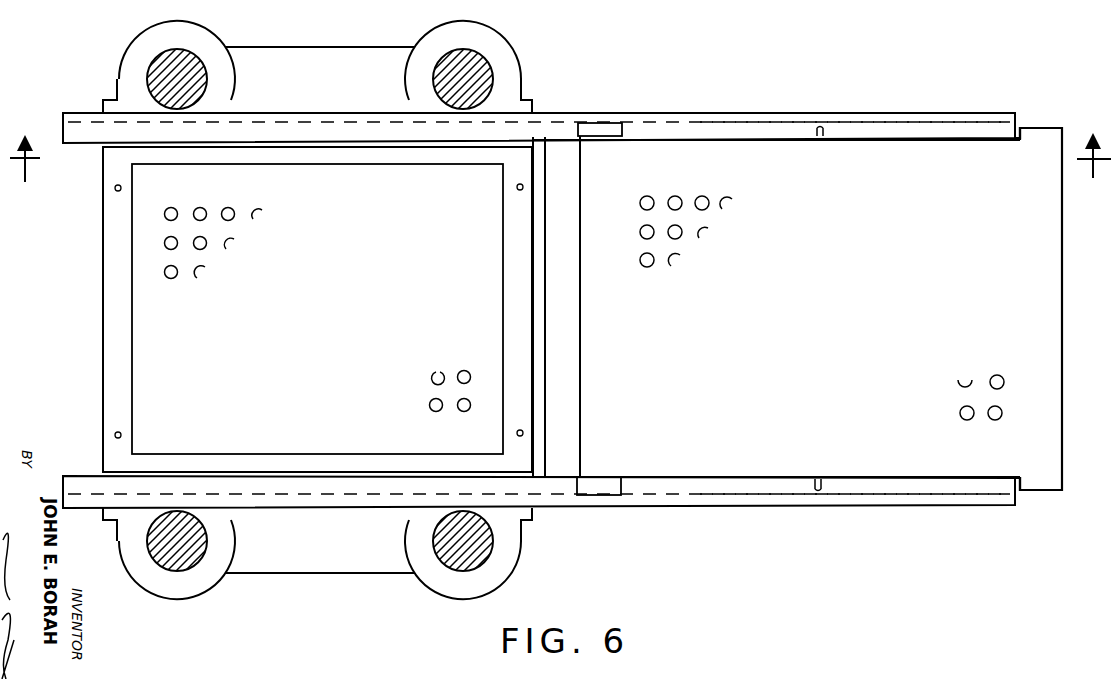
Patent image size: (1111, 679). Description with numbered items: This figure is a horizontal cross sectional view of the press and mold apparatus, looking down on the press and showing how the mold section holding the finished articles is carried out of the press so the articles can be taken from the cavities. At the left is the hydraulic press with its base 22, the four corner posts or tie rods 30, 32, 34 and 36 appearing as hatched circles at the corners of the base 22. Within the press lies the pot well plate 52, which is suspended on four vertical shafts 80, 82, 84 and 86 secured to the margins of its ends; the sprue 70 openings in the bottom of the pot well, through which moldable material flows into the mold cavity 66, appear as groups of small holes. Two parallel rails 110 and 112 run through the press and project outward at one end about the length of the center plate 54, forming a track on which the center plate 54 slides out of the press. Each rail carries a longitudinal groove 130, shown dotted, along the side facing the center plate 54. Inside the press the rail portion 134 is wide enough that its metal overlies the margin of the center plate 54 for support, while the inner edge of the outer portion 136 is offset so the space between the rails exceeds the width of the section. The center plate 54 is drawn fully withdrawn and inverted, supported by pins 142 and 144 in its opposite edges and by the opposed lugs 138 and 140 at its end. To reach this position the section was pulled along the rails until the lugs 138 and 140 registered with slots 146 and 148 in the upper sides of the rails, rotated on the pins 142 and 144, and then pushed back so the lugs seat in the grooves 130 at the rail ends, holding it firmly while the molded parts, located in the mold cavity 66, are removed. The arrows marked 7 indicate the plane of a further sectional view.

The section line 7- 7 is at (560, 175).
The base 22 is at (382, 62).
The corner post or tie rod 30 is at (487, 550).
The corner post or tie rod 32 is at (483, 82).
The corner post or tie rod 34 is at (152, 70).
The corner post or tie rod 36 is at (180, 565).
The pot well plate 52 is at (132, 355).
The center plate 54 is at (1062, 300).
The mold cavity 66 is at (702, 240).
The sprue 70 is at (177, 274).
The vertical shaft 80 is at (516, 433).
The vertical shaft 82 is at (516, 187).
The vertical shaft 84 is at (121, 188).
The vertical shaft 86 is at (121, 434).
The rail 110 is at (757, 507).
The rail 112 is at (750, 87).
The longitudinal groove 130 is at (938, 130).
The rail portion in the mold 134 is at (308, 137).
The rail portion 136 is at (735, 132).
The lug 138 is at (1047, 483).
The lug 140 is at (1048, 128).
The pin 142 is at (833, 143).
The pin 144 is at (815, 473).
The slot 146 is at (610, 485).
The slot 148 is at (602, 130).